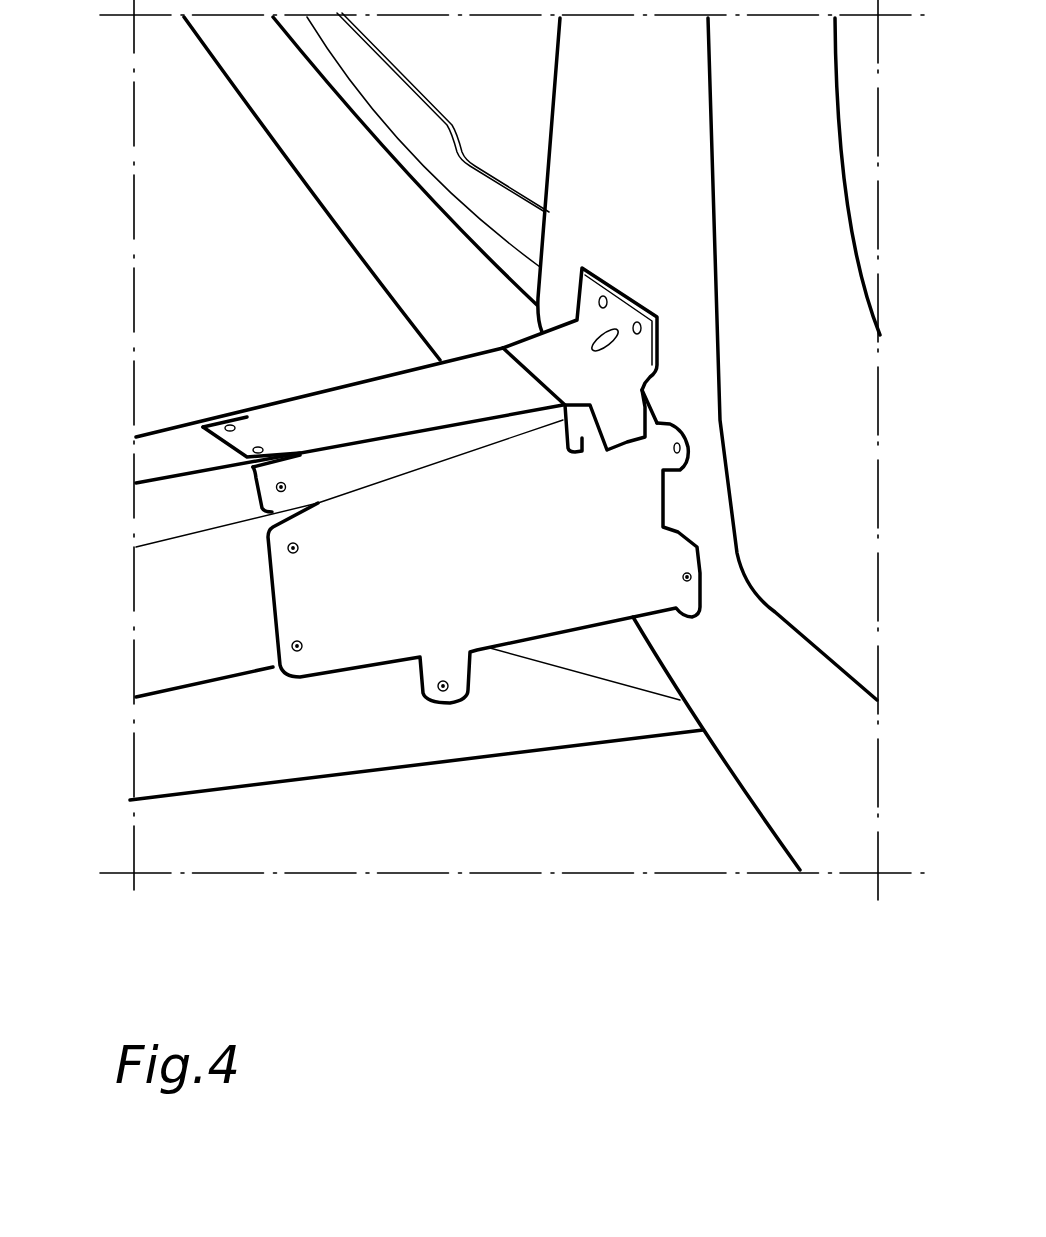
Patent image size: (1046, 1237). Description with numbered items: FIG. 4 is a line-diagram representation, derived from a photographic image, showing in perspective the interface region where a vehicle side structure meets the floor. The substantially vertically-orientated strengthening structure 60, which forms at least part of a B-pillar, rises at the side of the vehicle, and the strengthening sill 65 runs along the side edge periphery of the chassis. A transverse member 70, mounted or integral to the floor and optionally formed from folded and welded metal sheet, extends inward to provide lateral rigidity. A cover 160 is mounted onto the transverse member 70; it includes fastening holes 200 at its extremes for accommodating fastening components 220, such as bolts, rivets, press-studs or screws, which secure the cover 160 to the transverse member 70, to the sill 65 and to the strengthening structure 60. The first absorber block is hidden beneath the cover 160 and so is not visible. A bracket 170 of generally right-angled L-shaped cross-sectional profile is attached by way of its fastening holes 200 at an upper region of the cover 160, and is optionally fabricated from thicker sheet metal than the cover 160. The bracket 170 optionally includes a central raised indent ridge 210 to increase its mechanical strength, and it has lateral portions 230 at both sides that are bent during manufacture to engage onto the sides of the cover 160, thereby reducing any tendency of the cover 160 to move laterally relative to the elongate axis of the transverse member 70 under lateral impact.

The strengthening structure 60 is at (633, 103).
The strengthening sill 65 is at (373, 245).
The transverse member 70 is at (188, 628).
The cover 160 is at (365, 412).
The bracket 170 is at (540, 345).
The fastening holes 200 is at (447, 680).
The central raised indent ridge 210 is at (617, 347).
The fastening components 220 is at (634, 320).
The lateral portions 230 is at (618, 423).